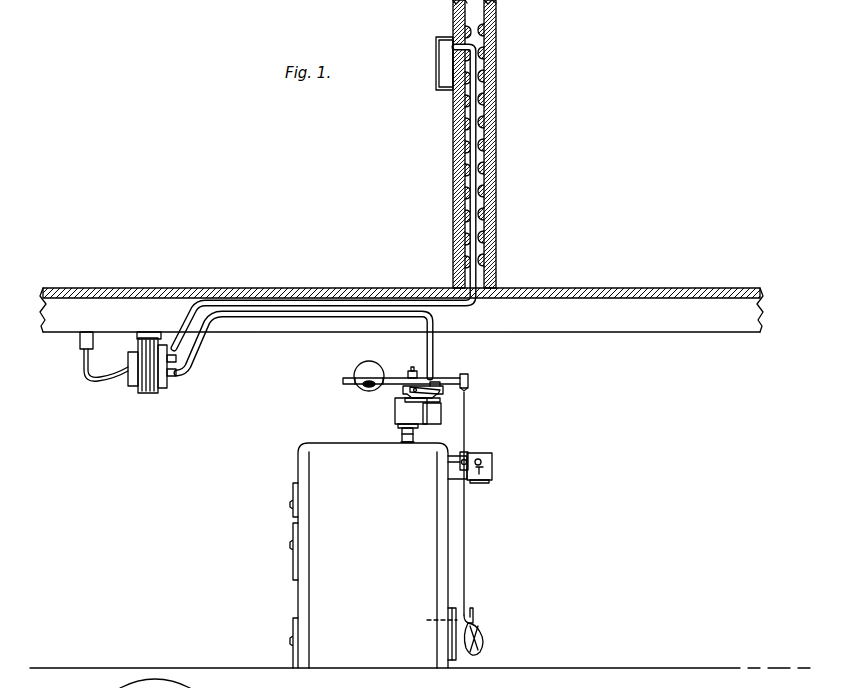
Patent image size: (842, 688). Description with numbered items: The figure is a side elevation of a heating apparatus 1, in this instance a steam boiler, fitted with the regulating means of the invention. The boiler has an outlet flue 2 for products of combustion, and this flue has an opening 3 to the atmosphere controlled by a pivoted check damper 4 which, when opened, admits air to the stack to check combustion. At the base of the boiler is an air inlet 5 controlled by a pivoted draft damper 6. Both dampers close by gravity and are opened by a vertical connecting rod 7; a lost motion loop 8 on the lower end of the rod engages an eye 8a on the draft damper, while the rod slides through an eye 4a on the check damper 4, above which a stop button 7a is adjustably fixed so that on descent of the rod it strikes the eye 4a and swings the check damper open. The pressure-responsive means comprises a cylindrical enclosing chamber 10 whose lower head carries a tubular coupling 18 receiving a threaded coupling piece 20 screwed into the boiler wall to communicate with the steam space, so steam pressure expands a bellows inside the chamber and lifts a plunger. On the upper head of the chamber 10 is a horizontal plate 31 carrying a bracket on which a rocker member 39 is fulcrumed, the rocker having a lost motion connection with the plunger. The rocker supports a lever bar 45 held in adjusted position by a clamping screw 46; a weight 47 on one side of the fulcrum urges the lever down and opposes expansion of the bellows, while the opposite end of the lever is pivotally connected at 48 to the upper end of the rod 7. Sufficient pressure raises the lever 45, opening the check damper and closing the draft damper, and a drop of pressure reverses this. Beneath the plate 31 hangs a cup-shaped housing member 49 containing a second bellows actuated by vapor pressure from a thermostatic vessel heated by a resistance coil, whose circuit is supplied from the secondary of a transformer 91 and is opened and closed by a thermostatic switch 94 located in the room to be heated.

The heating apparatus 1 is at (328, 584).
The outlet flue 2 is at (455, 469).
The opening 3 is at (484, 481).
The check damper 4 is at (492, 468).
The eye 4a is at (460, 462).
The air inlet 5 is at (450, 637).
The draft damper 6 is at (435, 618).
The connecting rod 7 is at (470, 553).
The stop button 7a is at (468, 455).
The lost motion loop 8 is at (476, 615).
The eye 8a is at (476, 642).
The enclosing chamber 10 is at (390, 416).
The tubular coupling 18 is at (402, 433).
The coupling piece 20 is at (403, 444).
The horizontal plate 31 is at (441, 400).
The rocker member 39 is at (421, 384).
The lever bar 45 is at (446, 378).
The clamping screw 46 is at (412, 370).
The weight 47 is at (356, 367).
The pivotal connection 48 is at (470, 380).
The housing member 49 is at (441, 418).
The transformer 91 is at (165, 386).
The thermostatic switch 94 is at (443, 72).